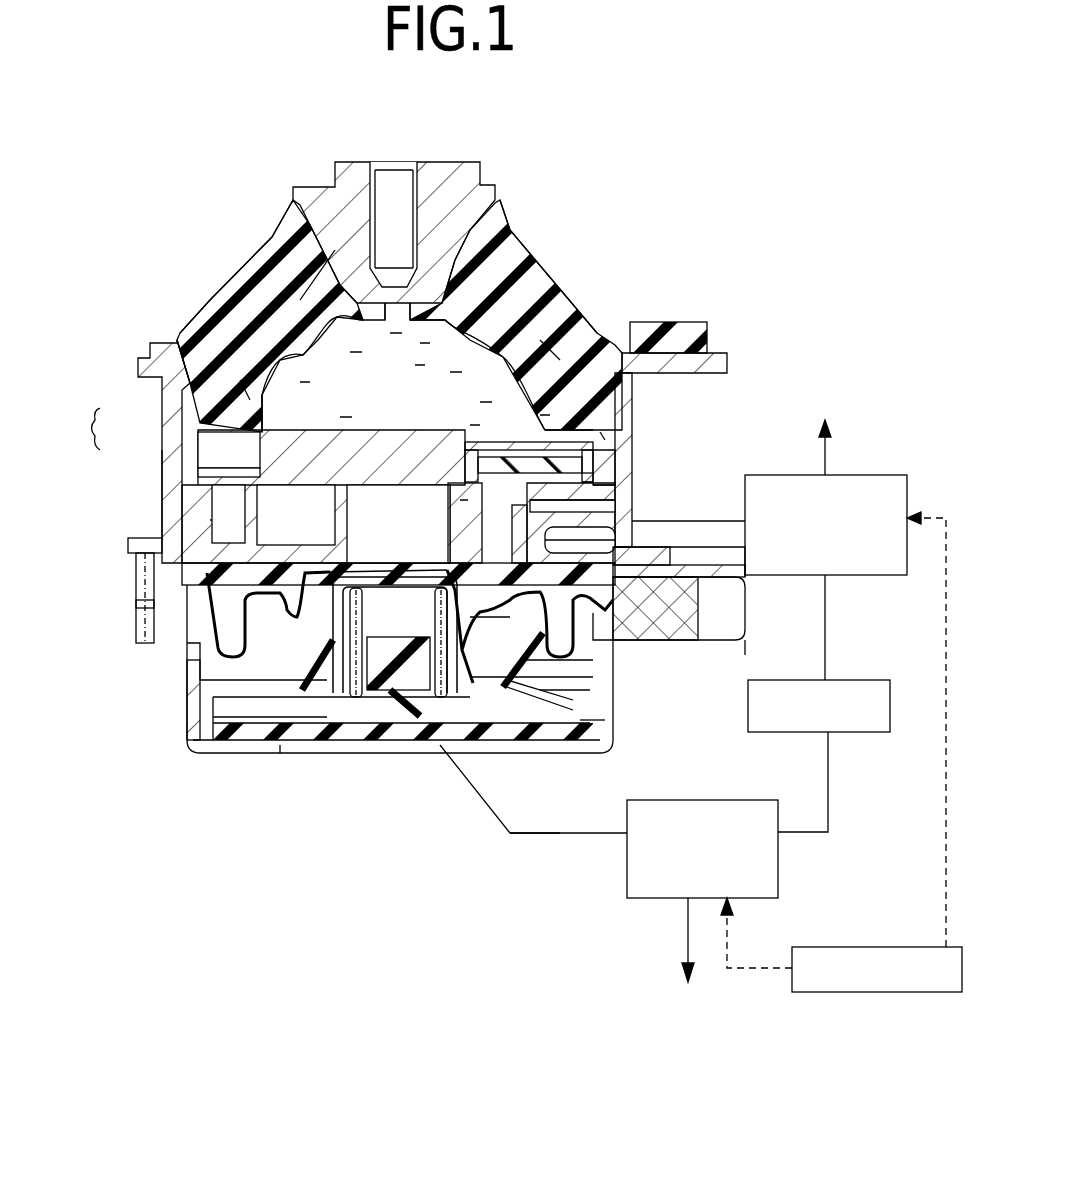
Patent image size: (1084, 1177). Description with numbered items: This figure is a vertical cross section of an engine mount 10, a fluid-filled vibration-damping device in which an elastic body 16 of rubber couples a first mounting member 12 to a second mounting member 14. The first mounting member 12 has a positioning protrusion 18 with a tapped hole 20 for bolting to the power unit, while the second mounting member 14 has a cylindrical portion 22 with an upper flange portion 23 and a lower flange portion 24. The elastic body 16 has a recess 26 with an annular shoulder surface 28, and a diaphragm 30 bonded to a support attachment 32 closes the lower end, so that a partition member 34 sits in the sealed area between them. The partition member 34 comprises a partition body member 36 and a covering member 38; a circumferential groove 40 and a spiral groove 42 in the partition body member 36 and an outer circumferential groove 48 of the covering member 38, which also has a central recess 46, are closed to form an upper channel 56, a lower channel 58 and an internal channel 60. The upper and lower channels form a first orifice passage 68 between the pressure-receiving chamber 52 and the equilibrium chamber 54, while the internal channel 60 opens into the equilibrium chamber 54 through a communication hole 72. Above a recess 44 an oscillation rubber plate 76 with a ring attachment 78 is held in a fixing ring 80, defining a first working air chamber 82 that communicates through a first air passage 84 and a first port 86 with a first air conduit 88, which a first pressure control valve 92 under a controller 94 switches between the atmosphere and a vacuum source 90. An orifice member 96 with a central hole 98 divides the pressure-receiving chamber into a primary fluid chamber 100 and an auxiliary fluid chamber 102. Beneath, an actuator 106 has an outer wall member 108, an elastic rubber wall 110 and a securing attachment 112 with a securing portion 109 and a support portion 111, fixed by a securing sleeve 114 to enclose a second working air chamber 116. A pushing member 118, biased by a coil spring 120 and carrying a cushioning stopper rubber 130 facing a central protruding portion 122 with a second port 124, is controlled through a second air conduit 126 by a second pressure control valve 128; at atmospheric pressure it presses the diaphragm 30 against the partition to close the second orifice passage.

The engine mount 10 is at (562, 205).
The first mounting member 12 is at (488, 205).
The second mounting member 14 is at (640, 430).
The elastic body 16 is at (537, 280).
The positioning protrusion 18 is at (463, 172).
The tapped hole 20 is at (382, 200).
The cylindrical portion 22 is at (170, 403).
The upper flange portion 23 is at (718, 362).
The lower flange portion 24 is at (130, 557).
The recess 26 is at (318, 340).
The annular shoulder surface 28 is at (212, 422).
The diaphragm 30 is at (215, 650).
The support attachment 32 is at (130, 603).
The partition member 34 is at (640, 492).
The partition body member 36 is at (178, 515).
The covering member 38 is at (258, 425).
The circumferential groove 40 is at (205, 493).
The spiral groove 42 is at (288, 482).
The recess 44 is at (592, 458).
The central recess 46 is at (270, 440).
The outer circumferential groove 48 is at (235, 492).
The pressure-receiving chamber 52 is at (390, 364).
The equilibrium chamber 54 is at (568, 598).
The upper channel 56 is at (222, 442).
The lower channel 58 is at (232, 468).
The internal channel 60 is at (378, 495).
The first orifice passage 68 is at (81, 429).
The communication hole 72 is at (452, 520).
The oscillation rubber plate 76 is at (560, 452).
The ring attachment 78 is at (600, 503).
The fixing ring 80 is at (598, 472).
The first working air chamber 82 is at (650, 600).
The first air passage 84 is at (700, 615).
The first port 86 is at (600, 534).
The first air conduit 88 is at (720, 520).
The vacuum source 90 is at (857, 680).
The first pressure control valve 92 is at (900, 488).
The controller 94 is at (820, 992).
The orifice member 96 is at (476, 442).
The central hole 98 is at (555, 420).
The primary fluid chamber 100 is at (495, 365).
The auxiliary fluid chamber 102 is at (522, 458).
The actuator 106 is at (285, 760).
The outer wall member 108 is at (300, 748).
The securing portion 109 is at (730, 638).
The elastic rubber wall 110 is at (560, 695).
The support portion 111 is at (555, 750).
The securing attachment 112 is at (605, 728).
The securing sleeve 114 is at (212, 692).
The second working air chamber 116 is at (287, 720).
The pushing member 118 is at (340, 748).
The coil spring 120 is at (385, 748).
The central protruding portion 122 is at (445, 715).
The second port 124 is at (405, 748).
The second air conduit 126 is at (565, 838).
The second pressure control valve 128 is at (748, 812).
The cushioning stopper rubber 130 is at (440, 560).